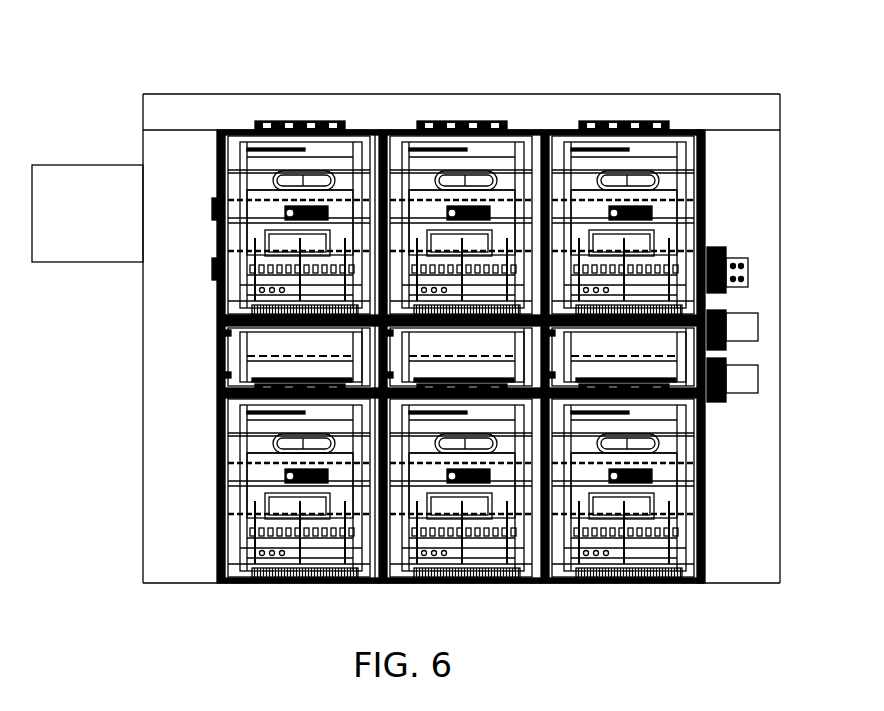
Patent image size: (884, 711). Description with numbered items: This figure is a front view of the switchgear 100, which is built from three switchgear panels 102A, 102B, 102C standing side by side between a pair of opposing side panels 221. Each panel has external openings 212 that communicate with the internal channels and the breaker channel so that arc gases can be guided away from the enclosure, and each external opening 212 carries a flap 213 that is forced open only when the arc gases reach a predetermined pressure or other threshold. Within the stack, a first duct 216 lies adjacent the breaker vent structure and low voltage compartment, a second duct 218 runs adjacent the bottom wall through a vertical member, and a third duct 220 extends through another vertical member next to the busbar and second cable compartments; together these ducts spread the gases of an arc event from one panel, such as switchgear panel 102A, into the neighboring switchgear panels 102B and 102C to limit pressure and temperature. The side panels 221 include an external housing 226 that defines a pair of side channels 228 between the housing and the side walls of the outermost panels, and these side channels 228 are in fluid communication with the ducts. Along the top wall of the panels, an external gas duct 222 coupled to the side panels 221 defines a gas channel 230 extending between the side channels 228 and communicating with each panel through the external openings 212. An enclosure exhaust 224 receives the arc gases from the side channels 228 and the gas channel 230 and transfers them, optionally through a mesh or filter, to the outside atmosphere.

The switchgear 100 is at (110, 48).
The switchgear panel 102A is at (258, 580).
The switchgear panel 102B is at (512, 584).
The switchgear panel 102C is at (668, 509).
The external openings 212 is at (372, 128).
The flap 213 is at (222, 128).
The first duct 216 is at (215, 568).
The second duct 218 is at (215, 336).
The third duct 220 is at (212, 240).
The side panels 221 is at (143, 411).
The external gas duct 222 is at (737, 94).
The enclosure exhaust 224 is at (67, 262).
The external housing 226 is at (781, 308).
The side channels 228 is at (733, 186).
The gas channel 230 is at (538, 115).